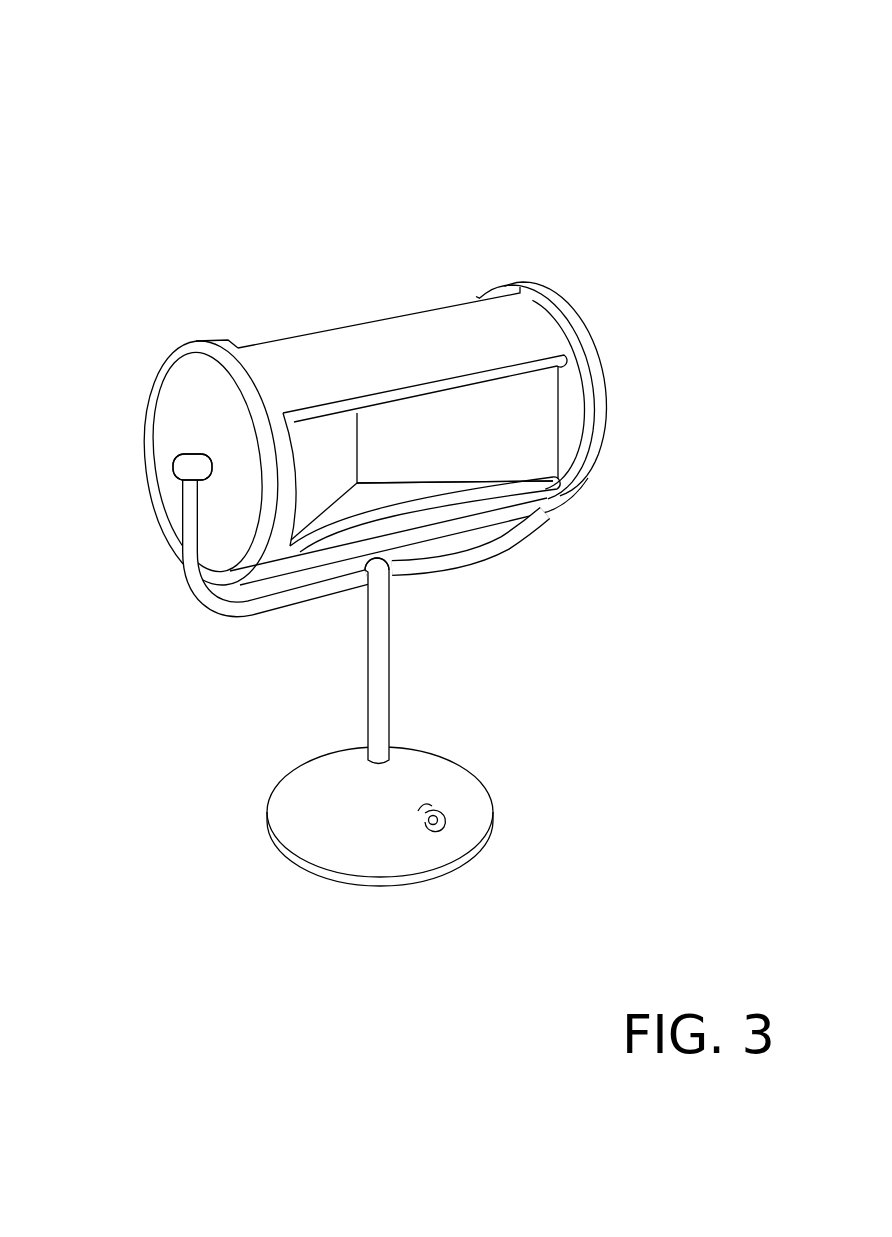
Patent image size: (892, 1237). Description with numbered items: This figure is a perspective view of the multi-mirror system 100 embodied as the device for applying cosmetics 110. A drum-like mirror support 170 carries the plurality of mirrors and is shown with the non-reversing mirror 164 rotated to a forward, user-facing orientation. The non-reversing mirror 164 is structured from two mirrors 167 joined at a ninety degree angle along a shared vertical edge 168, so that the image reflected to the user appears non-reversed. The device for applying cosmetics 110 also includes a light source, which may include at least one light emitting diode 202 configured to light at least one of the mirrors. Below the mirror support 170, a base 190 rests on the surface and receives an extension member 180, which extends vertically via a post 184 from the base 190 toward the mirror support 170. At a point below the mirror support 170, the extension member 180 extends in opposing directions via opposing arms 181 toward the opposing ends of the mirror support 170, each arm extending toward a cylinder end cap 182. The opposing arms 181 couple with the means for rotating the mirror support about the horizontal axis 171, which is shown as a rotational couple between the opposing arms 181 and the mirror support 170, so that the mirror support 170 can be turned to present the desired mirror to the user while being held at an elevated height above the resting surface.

The lighting system 100 is at (510, 86).
The device for applying cosmetics 110 is at (546, 118).
The cylinder end cap 182 is at (171, 348).
The mirror support 170 is at (311, 357).
The non-reversing mirror 164 is at (506, 425).
The shared vertical edge 168 is at (363, 432).
The mirrors 167 is at (322, 474).
The means for rotating the mirror support about the horizontal axis 171 is at (187, 469).
The light emitting diode 202 is at (208, 456).
The opposing arms 181 is at (186, 562).
The extension member 180 is at (383, 569).
The post 184 is at (383, 732).
The base 190 is at (322, 814).